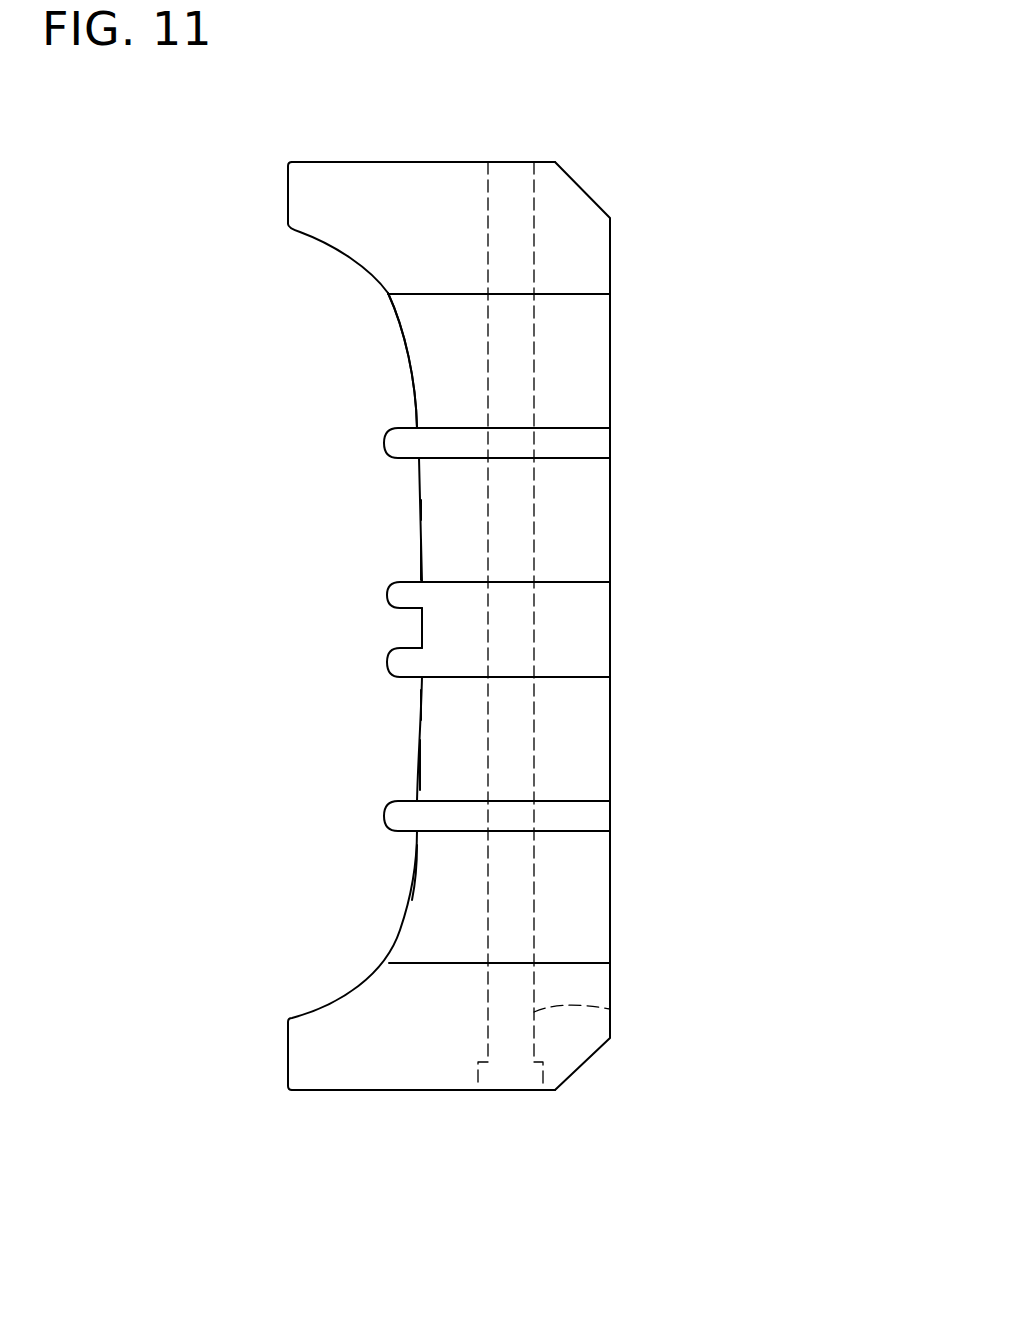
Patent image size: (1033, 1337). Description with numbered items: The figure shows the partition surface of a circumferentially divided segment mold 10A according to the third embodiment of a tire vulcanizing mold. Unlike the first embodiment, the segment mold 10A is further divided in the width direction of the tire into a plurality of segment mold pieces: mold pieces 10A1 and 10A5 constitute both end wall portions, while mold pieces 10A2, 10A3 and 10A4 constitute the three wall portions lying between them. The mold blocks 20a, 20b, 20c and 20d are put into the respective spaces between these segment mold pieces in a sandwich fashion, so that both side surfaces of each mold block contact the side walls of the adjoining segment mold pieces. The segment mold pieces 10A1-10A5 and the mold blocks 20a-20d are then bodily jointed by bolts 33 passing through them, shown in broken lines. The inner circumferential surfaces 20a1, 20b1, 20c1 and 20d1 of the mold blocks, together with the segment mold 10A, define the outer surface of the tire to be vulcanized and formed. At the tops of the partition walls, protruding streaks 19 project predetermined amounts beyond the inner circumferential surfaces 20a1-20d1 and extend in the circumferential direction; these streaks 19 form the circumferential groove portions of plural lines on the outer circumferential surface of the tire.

The segment mold 10A is at (592, 180).
The segment mold piece 10A1 is at (388, 172).
The segment mold piece 10A2 is at (597, 446).
The segment mold piece 10A3 is at (595, 630).
The segment mold piece 10A4 is at (595, 818).
The segment mold piece 10A5 is at (400, 1093).
The protruding streak 19 is at (392, 443).
The mold block 20a is at (428, 315).
The inner circumferential surface 20a1 is at (415, 378).
The mold block 20b is at (437, 500).
The inner circumferential surface 20b1 is at (420, 557).
The mold block 20c is at (437, 758).
The inner circumferential surface 20c1 is at (422, 702).
The mold block 20d is at (425, 883).
The inner circumferential surface 20d1 is at (400, 945).
The bolt 33 is at (610, 1009).